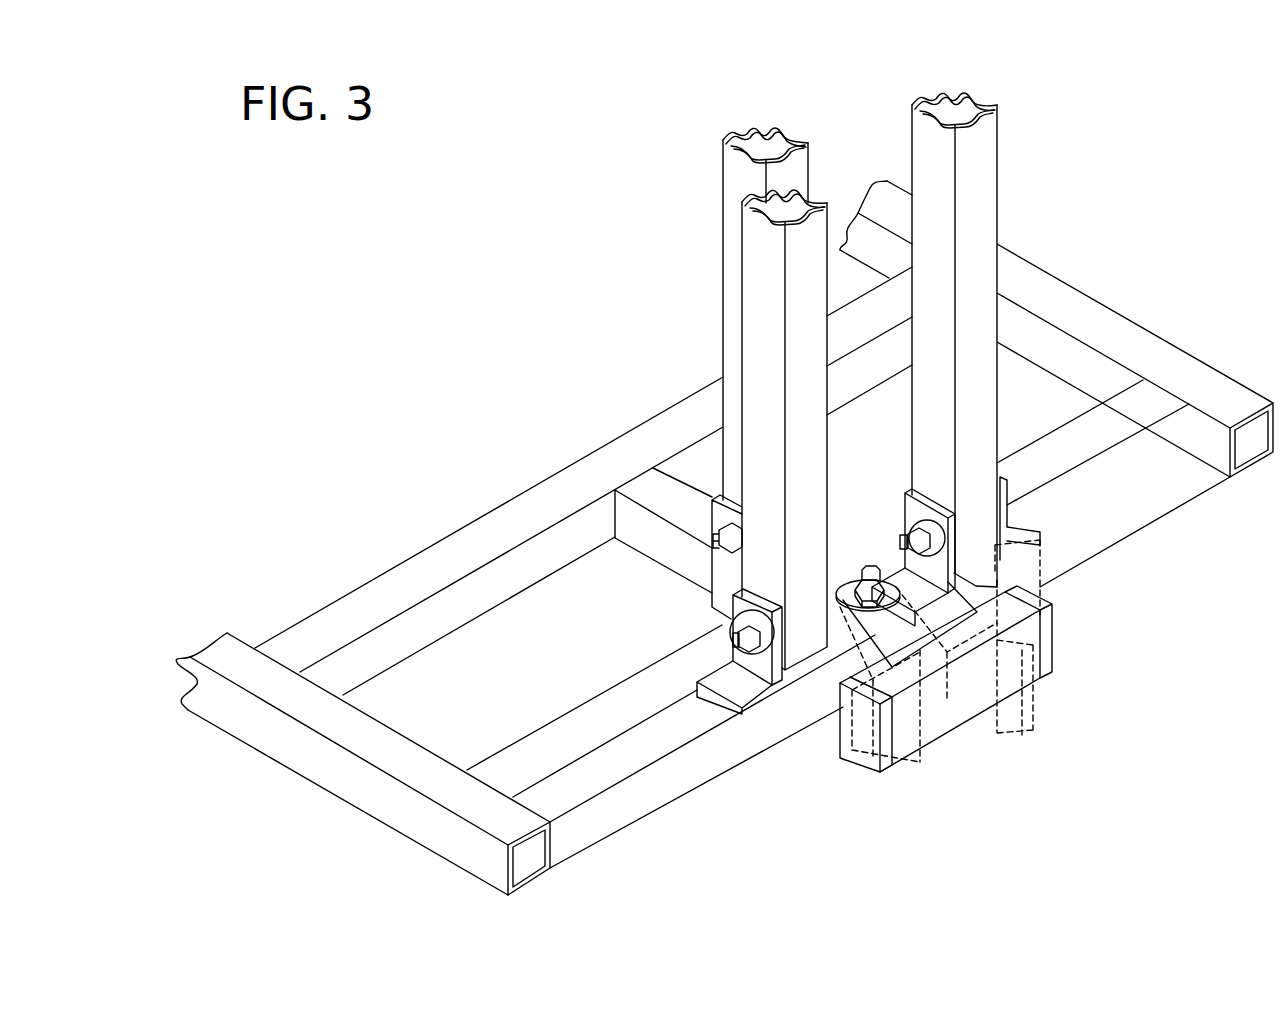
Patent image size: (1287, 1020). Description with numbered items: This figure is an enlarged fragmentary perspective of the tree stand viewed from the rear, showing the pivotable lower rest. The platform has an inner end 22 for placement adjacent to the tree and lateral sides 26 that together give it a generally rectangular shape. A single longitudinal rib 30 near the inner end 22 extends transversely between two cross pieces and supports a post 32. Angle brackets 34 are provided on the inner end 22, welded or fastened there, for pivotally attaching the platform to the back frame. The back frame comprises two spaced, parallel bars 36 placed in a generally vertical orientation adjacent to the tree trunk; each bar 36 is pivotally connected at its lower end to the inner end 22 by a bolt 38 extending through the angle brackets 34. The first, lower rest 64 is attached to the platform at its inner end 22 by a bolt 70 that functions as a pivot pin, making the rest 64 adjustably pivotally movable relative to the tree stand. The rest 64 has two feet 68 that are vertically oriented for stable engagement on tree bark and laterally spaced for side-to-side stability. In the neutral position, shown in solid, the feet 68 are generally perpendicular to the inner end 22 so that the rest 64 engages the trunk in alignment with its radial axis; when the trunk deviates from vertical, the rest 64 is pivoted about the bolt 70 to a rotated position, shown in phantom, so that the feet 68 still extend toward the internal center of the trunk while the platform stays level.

The inner end 22 is at (1208, 492).
The lateral sides 26 is at (1040, 270).
The longitudinal rib 30 is at (645, 559).
The post 32 is at (723, 218).
The angle brackets 34 is at (937, 493).
The bars 36 is at (998, 163).
The bolt 38 is at (900, 537).
The first rest 64 is at (972, 693).
The feet 68 is at (1055, 640).
The bolt 70 is at (862, 570).